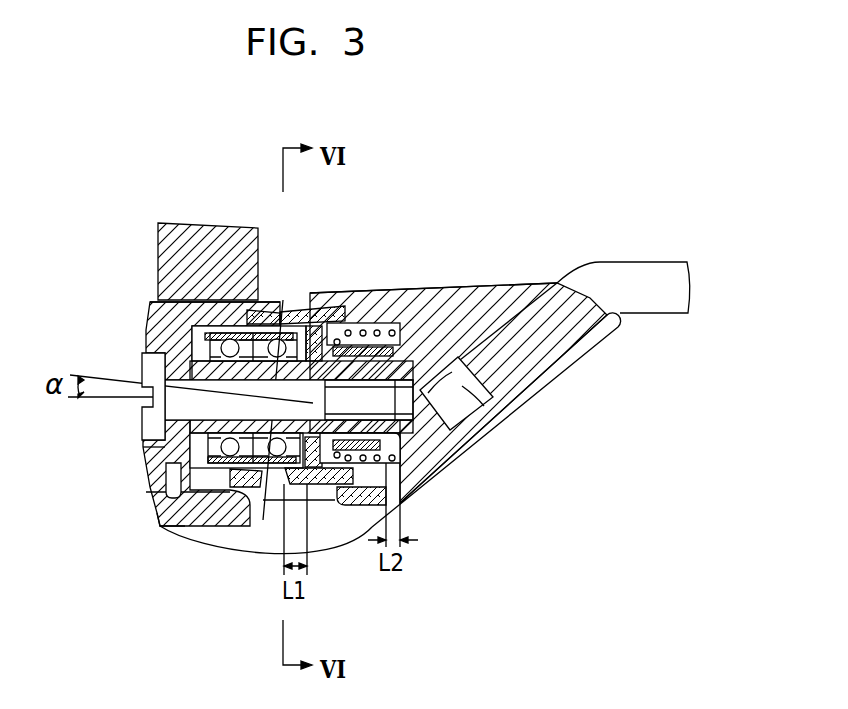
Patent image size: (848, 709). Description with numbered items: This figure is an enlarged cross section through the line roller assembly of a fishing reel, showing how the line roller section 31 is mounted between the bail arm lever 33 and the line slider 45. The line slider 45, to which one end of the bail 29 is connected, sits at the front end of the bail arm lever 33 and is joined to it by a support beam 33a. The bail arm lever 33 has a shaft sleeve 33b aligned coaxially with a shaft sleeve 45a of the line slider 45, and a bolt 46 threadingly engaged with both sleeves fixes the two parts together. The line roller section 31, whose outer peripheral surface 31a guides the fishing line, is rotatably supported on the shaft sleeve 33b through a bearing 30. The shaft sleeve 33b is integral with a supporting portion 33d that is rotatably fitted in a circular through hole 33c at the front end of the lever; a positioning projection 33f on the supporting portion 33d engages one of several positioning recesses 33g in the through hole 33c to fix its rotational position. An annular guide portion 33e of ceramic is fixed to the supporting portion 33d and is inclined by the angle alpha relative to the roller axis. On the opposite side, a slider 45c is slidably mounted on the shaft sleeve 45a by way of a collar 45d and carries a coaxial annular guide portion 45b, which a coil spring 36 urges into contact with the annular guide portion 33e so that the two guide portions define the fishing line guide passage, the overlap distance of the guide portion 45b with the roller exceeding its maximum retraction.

The bail 29 is at (650, 273).
The bearing 30 is at (222, 455).
The line roller section 31 is at (147, 320).
The outer peripheral surface 31a is at (177, 301).
The bail arm lever 33 is at (158, 247).
The support beam 33a is at (265, 457).
The shaft sleeve 33b is at (342, 310).
The circular through hole 33c is at (233, 298).
The supporting portion 33d is at (143, 460).
The annular guide portion 33e is at (283, 300).
The positioning projection 33f is at (153, 500).
The positioning recesses 33g is at (173, 526).
The coil spring 36 is at (363, 453).
The line slider 45 is at (593, 348).
The shaft sleeve 45a is at (398, 345).
The annular guide portion 45b is at (284, 310).
The slider 45c is at (378, 365).
The collar 45d is at (428, 330).
The bolt 46 is at (143, 367).